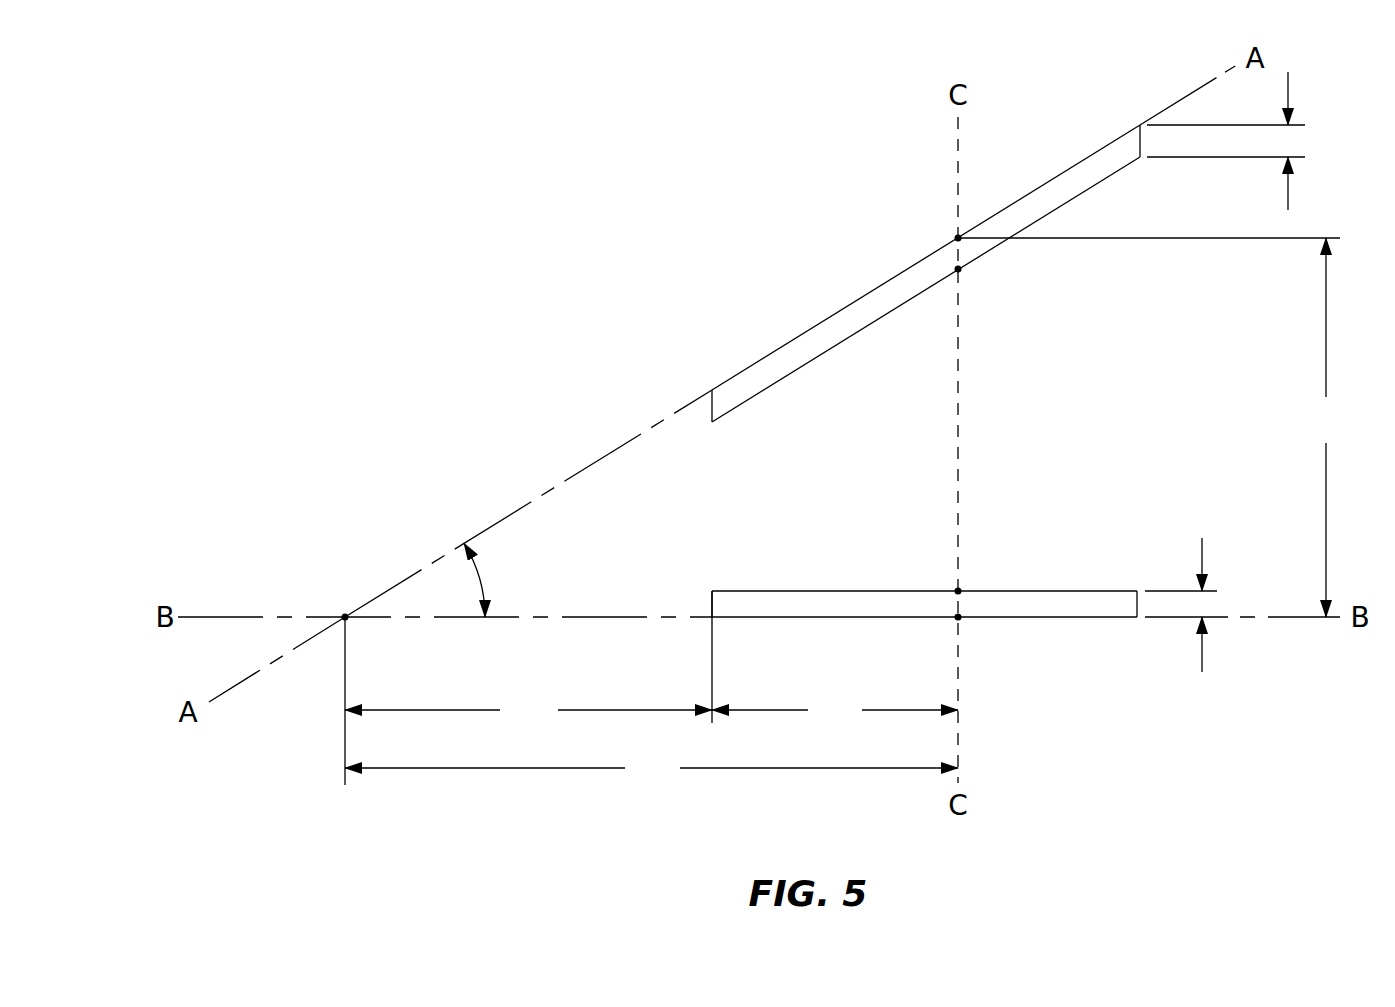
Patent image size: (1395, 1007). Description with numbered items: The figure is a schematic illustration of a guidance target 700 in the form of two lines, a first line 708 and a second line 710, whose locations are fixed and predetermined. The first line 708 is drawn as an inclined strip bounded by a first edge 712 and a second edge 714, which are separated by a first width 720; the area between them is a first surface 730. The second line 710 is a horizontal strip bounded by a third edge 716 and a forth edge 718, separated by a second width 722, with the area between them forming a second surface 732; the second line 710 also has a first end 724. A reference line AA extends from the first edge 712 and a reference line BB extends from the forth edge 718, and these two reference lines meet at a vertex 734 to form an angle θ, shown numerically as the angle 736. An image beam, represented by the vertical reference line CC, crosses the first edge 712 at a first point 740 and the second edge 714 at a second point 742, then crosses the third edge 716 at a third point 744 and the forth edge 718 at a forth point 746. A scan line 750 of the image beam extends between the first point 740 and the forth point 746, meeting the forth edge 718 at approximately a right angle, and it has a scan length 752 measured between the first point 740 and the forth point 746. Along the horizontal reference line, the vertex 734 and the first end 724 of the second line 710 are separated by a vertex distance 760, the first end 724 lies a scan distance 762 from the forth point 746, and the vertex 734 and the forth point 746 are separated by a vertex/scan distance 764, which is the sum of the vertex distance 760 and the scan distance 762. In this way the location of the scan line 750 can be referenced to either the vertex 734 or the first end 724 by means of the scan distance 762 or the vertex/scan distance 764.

The guidance target 700 is at (545, 228).
The first line 708 is at (1042, 160).
The second line 710 is at (1096, 635).
The first edge 712 is at (820, 320).
The second edge 714 is at (837, 347).
The third edge 716 is at (831, 590).
The forth edge 718 is at (818, 617).
The first width 720 is at (1290, 140).
The second width 722 is at (1203, 603).
The first end 724 is at (712, 605).
The first surface 730 is at (775, 365).
The second surface 732 is at (765, 598).
The vertex 734 is at (345, 617).
The angle θ 736 is at (485, 580).
The first point 740 is at (958, 238).
The second point 742 is at (958, 269).
The third point 744 is at (958, 591).
The forth point 746 is at (958, 617).
The scan line 750 is at (960, 427).
The scan length 752 is at (1153, 427).
The vertex distance 760 is at (528, 710).
The scan distance 762 is at (835, 710).
The vertex/scan distance 764 is at (651, 768).